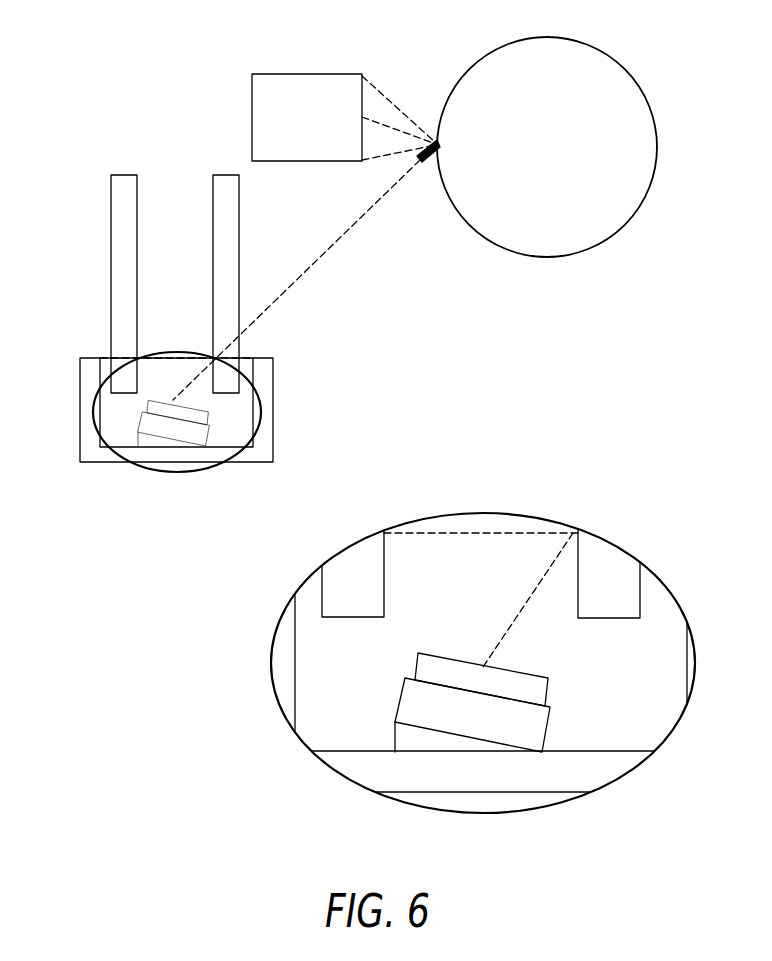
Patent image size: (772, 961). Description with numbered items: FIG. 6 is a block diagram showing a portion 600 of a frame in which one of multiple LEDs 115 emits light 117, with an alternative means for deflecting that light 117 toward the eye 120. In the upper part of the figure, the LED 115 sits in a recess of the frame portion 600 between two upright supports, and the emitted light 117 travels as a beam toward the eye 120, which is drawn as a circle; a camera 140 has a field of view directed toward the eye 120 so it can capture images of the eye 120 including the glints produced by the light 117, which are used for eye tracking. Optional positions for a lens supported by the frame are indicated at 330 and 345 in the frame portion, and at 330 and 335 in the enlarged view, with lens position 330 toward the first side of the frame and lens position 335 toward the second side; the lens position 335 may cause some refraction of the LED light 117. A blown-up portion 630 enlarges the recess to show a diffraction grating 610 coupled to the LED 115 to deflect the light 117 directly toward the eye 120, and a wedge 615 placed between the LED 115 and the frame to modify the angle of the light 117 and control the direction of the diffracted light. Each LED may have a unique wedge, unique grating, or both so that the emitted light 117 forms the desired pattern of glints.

The LED 115 is at (319, 535).
The light 117 is at (327, 250).
The eye 120 is at (547, 37).
The camera 140 is at (298, 74).
The lens position 330 is at (111, 198).
The lens position 335 is at (642, 587).
The second wall 345 is at (213, 201).
The portion of frame 600 is at (80, 372).
The diffraction grating 610 is at (155, 398).
The wedge 615 is at (207, 445).
The blown-up portion 630 is at (167, 470).